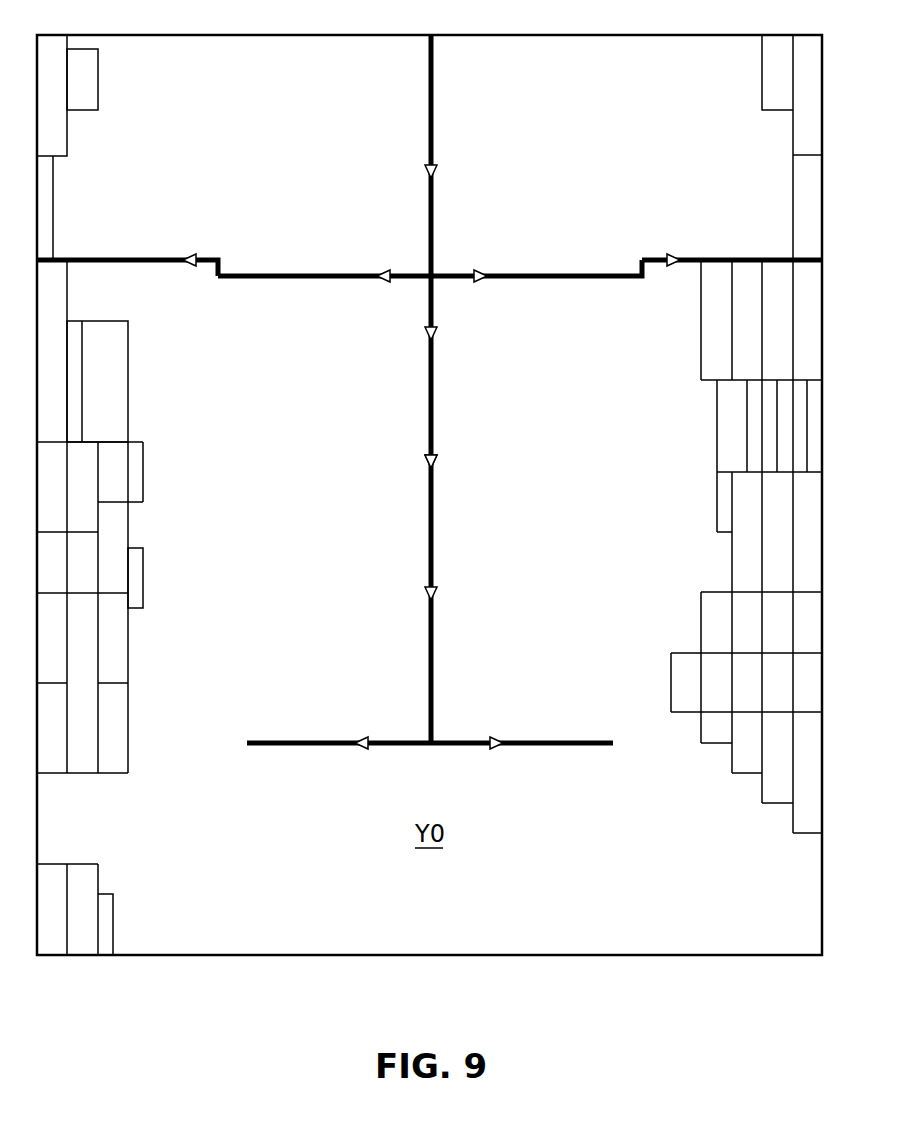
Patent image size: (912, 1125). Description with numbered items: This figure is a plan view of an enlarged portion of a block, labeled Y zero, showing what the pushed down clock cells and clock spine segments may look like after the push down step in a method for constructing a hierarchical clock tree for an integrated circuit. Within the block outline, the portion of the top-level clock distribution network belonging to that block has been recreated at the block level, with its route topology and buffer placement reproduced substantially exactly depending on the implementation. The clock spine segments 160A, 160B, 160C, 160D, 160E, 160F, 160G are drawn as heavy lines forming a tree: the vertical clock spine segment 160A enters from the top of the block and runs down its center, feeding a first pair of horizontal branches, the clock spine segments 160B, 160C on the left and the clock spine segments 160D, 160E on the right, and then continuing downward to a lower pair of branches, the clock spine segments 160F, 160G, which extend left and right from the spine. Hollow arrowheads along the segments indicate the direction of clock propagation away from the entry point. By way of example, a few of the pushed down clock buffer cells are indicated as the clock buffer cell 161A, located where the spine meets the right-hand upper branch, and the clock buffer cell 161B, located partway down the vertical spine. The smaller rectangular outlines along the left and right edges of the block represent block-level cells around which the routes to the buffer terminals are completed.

The clock spine segment 160A is at (434, 116).
The clock spine segment 160B is at (146, 257).
The clock spine segment 160C is at (308, 270).
The clock spine segment 160D is at (550, 270).
The clock spine segment 160E is at (688, 257).
The clock spine segment 160F is at (326, 740).
The clock spine segment 160G is at (526, 740).
The clock buffer cell 161A is at (480, 282).
The clock buffer cell 161B is at (437, 464).